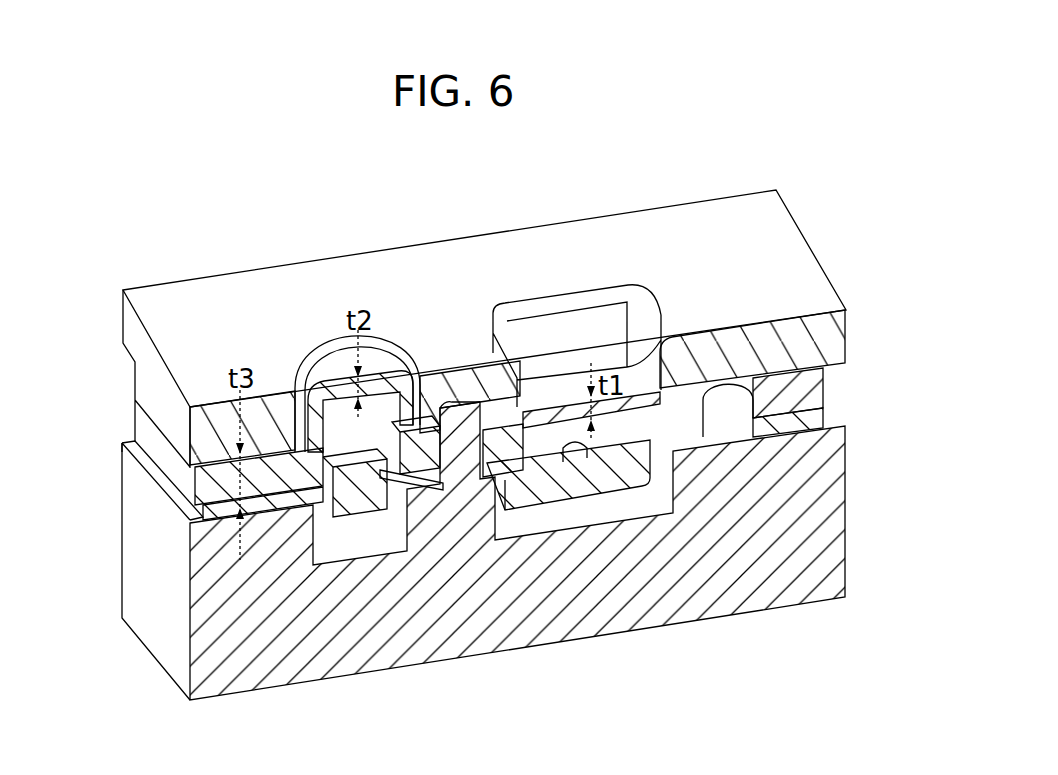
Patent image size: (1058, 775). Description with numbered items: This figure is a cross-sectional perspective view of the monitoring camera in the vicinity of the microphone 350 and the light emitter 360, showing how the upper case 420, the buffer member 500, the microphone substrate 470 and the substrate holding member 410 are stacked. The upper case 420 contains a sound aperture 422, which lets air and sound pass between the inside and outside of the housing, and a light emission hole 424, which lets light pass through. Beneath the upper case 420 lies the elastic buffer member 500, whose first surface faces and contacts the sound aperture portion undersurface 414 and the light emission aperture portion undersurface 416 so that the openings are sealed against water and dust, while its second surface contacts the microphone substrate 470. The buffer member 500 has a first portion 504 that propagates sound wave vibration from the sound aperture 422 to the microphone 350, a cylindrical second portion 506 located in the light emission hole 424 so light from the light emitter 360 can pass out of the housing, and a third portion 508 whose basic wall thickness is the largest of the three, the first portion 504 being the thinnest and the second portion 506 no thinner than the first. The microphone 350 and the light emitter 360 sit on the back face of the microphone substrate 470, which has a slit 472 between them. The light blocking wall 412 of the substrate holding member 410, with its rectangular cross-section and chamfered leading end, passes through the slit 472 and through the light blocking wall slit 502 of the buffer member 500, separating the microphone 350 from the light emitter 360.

The microphone 350 is at (593, 483).
The light emitter 360 is at (362, 490).
The substrate holding member 410 is at (153, 635).
The light blocking wall 412 is at (460, 402).
The sound aperture portion undersurface 414 is at (683, 380).
The light emission aperture portion undersurface 416 is at (282, 430).
The upper case 420 is at (483, 329).
The sound aperture 422 is at (637, 337).
The light emission hole 424 is at (402, 348).
The microphone substrate 470 is at (517, 467).
The slit 472 is at (443, 490).
The buffer member 500 is at (598, 361).
The light blocking wall slit 502 is at (478, 400).
The first portion 504 is at (555, 392).
The second portion 506 is at (347, 367).
The third portion 508 is at (220, 490).